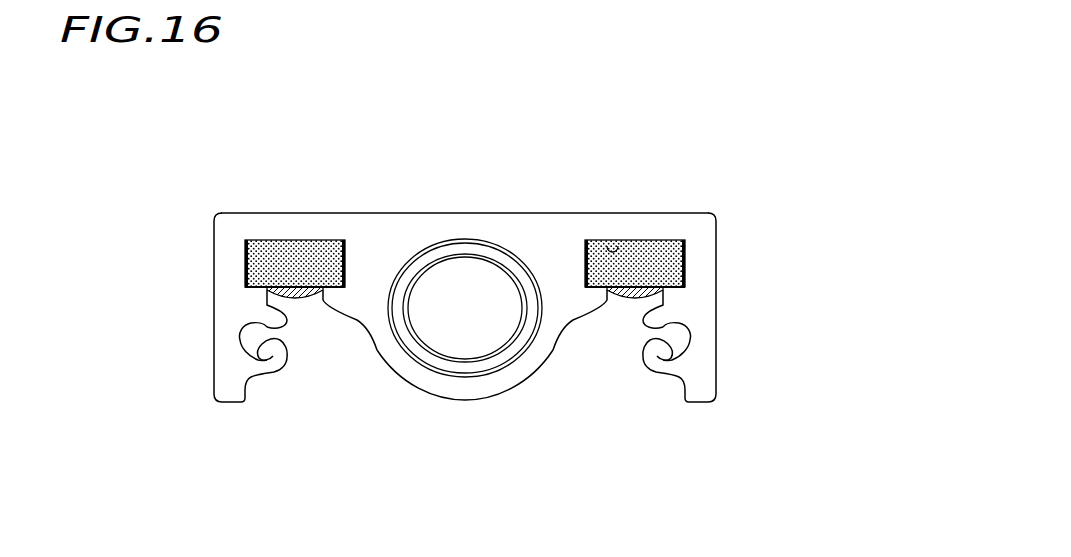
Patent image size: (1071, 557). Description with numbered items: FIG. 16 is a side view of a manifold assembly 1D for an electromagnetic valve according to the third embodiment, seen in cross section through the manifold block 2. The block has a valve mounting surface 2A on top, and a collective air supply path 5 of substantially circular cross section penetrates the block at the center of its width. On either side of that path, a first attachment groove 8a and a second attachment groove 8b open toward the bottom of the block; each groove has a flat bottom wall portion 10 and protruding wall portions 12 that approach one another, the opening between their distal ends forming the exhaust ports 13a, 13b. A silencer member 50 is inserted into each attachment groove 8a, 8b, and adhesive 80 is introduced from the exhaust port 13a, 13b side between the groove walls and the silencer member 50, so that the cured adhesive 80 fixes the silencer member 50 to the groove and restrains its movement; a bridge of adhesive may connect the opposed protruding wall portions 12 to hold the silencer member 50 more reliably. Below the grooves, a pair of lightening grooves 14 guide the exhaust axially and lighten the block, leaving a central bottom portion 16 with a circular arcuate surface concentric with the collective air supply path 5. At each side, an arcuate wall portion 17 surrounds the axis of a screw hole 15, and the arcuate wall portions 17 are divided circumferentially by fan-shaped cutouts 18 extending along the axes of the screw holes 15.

The manifold assembly for an electromagnetic valve 1D is at (804, 87).
The manifold block 2 is at (487, 380).
The valve mounting surface 2A is at (438, 212).
The collective air supply path 5 is at (476, 324).
The first attachment groove 8a is at (265, 214).
The second attachment groove 8b is at (668, 216).
The bottom wall portion 10 is at (612, 246).
The protruding wall portion 12 is at (250, 293).
The exhaust port 13a is at (254, 309).
The exhaust port 13b is at (676, 310).
The lightening groove 14 is at (358, 368).
The screw hole 15 is at (687, 337).
The central bottom portion 16 is at (445, 402).
The arcuate wall portion 17 is at (273, 394).
The fan-shaped cutout 18 is at (260, 337).
The silencer member 50 is at (247, 250).
The adhesive 80 is at (291, 294).